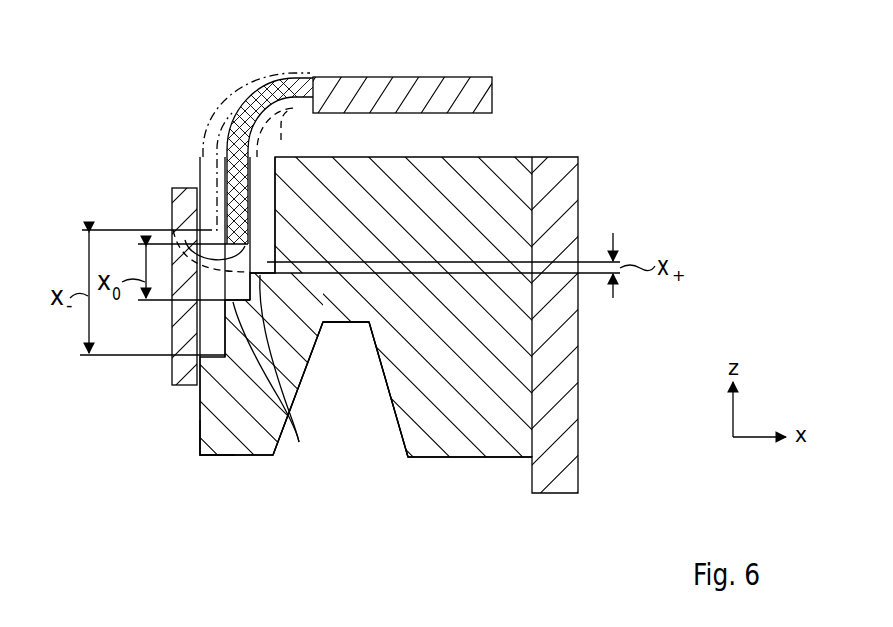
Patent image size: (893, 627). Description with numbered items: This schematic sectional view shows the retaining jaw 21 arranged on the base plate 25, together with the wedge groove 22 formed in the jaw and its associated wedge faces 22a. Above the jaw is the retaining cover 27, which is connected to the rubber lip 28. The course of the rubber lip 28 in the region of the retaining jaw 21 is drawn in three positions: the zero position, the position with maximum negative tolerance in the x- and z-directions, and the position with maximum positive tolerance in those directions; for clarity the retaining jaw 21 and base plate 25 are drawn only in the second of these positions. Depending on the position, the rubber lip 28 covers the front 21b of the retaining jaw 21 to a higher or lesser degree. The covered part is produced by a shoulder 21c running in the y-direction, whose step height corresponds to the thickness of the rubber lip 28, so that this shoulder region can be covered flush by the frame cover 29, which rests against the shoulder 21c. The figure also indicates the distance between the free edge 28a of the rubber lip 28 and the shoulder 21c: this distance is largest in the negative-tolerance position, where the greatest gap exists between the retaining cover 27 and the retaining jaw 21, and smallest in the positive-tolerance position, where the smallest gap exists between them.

The retaining jaw 21 is at (233, 462).
The front of the retaining jaw 21b is at (198, 430).
The shoulder 21c is at (317, 378).
The wedge groove 22 is at (355, 376).
The wedge faces 22a is at (390, 388).
The base plate 25 is at (560, 383).
The retaining cover 27 is at (398, 92).
The rubber lip 28 is at (250, 93).
The free edge of the rubber lip 28a is at (169, 229).
The frame cover 29 is at (172, 380).